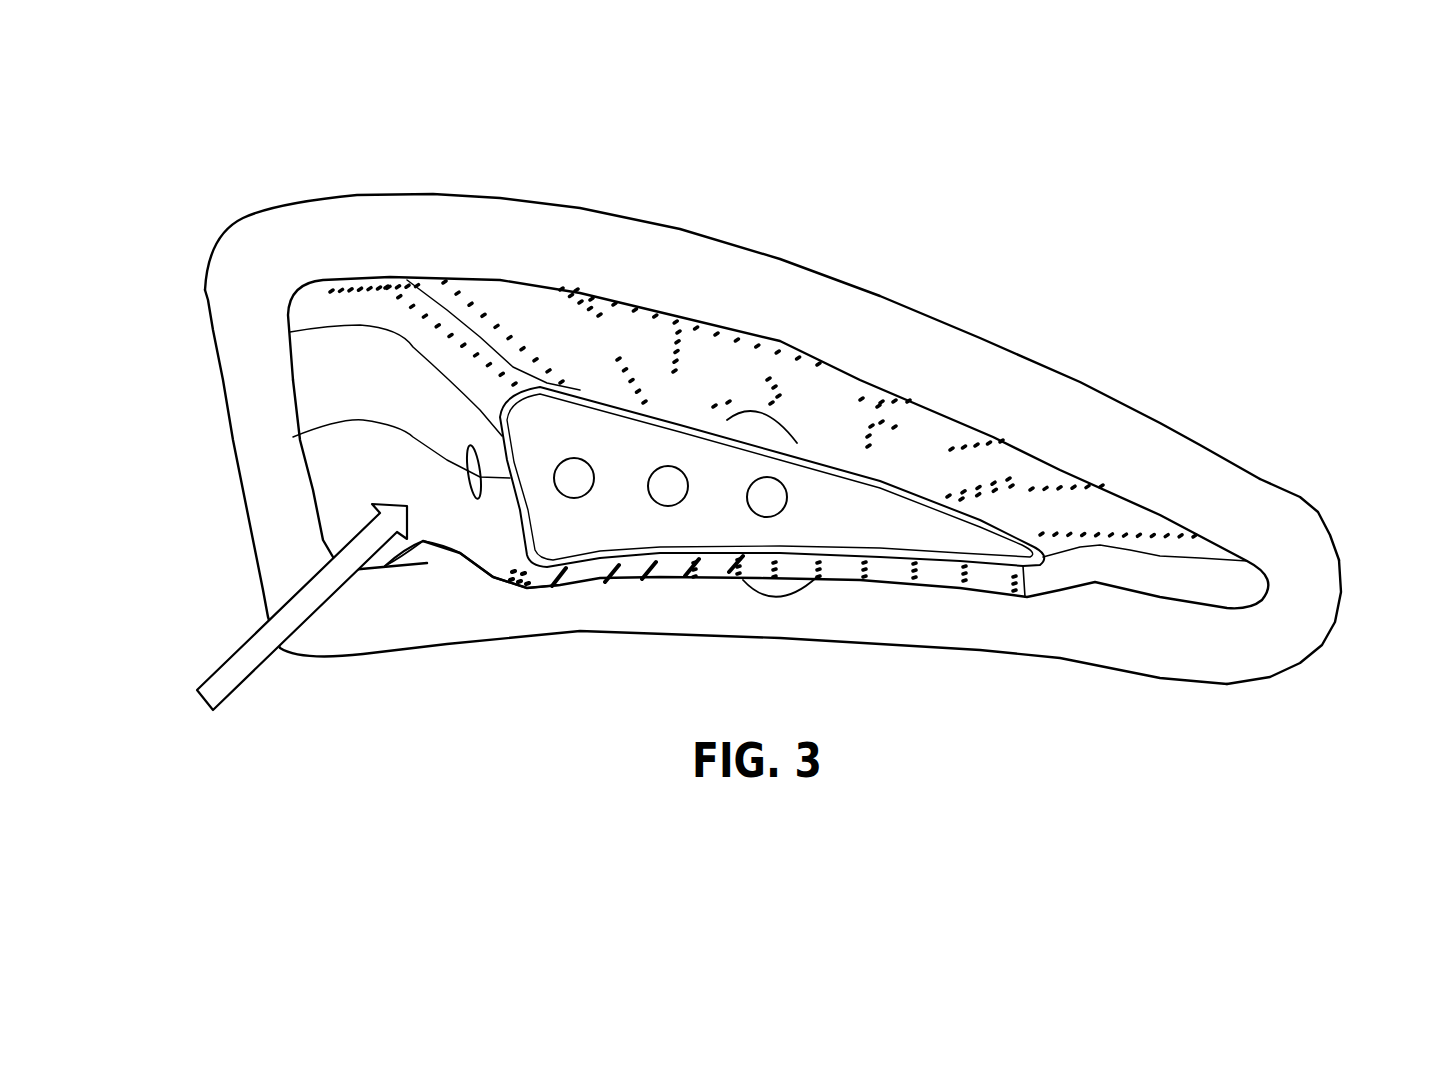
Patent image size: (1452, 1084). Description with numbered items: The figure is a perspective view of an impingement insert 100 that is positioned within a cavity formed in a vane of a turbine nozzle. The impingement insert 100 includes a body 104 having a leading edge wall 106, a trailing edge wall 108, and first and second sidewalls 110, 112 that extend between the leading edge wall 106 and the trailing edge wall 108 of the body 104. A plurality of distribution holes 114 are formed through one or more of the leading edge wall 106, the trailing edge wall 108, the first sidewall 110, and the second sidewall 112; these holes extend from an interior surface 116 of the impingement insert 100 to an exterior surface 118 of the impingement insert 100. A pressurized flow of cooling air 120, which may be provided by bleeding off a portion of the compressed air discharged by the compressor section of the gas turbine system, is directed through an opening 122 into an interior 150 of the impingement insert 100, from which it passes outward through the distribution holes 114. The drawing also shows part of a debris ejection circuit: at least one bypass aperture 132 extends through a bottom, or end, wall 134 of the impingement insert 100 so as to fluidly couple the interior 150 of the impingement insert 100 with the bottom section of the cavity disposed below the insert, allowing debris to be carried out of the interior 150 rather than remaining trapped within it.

The impingement insert 100 is at (197, 175).
The body 104 is at (988, 321).
The leading edge wall 106 is at (234, 458).
The trailing edge wall 108 is at (1340, 628).
The first sidewall 110 is at (874, 650).
The second sidewall 112 is at (708, 231).
The distribution holes 114 is at (574, 328).
The interior surface 116 is at (1128, 503).
The exterior surface 118 is at (1310, 500).
The pressurized flow of cooling air 120 is at (262, 668).
The opening 122 is at (428, 567).
The bypass aperture 132 is at (668, 506).
The bottom wall 134 is at (870, 521).
The interior 150 is at (596, 442).